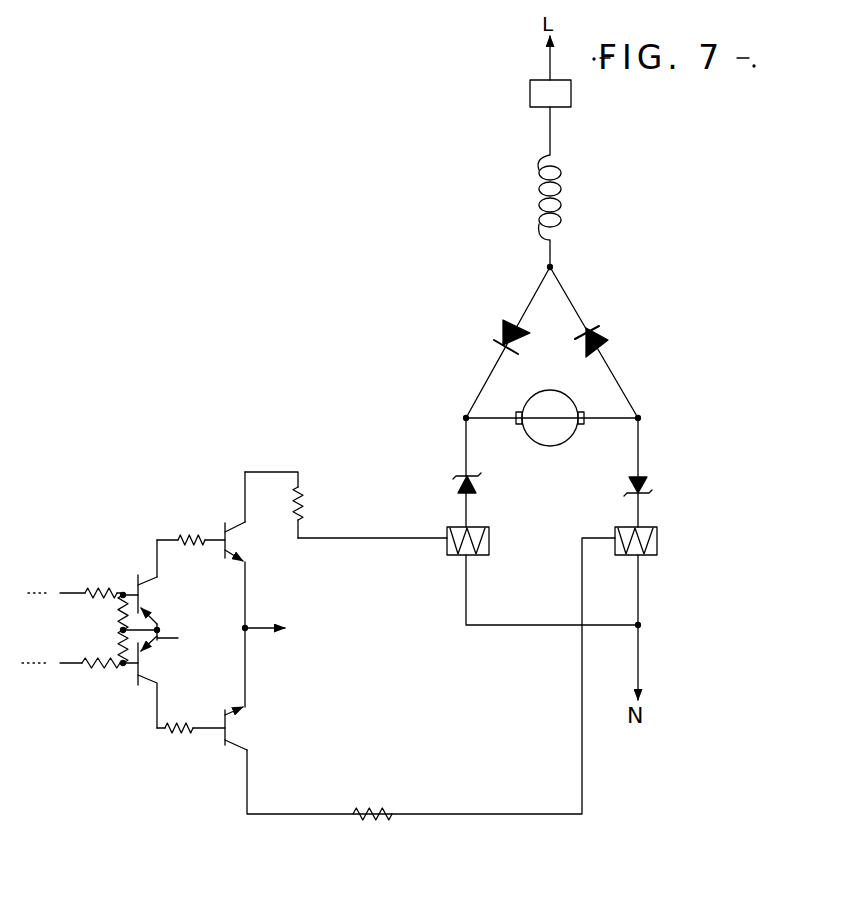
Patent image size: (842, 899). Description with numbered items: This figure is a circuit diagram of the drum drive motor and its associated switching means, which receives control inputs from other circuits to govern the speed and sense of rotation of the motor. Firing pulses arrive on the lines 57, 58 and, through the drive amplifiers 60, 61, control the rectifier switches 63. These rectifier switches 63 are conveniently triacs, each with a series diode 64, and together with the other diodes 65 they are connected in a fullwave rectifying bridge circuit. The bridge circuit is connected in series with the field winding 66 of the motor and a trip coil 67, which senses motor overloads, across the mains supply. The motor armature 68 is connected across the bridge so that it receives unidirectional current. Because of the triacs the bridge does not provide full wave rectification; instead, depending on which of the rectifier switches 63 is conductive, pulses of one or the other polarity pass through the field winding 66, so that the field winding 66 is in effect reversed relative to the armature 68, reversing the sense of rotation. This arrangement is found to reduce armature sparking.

The line 57 is at (70, 663).
The line 58 is at (68, 593).
The drive amplifier 60 is at (249, 733).
The drive amplifier 61 is at (268, 565).
The rectifier switch 63 is at (490, 546).
The series diode 64 is at (456, 488).
The diode 65 is at (503, 332).
The field winding 66 is at (561, 190).
The trip coil 67 is at (571, 95).
The motor armature 68 is at (550, 443).